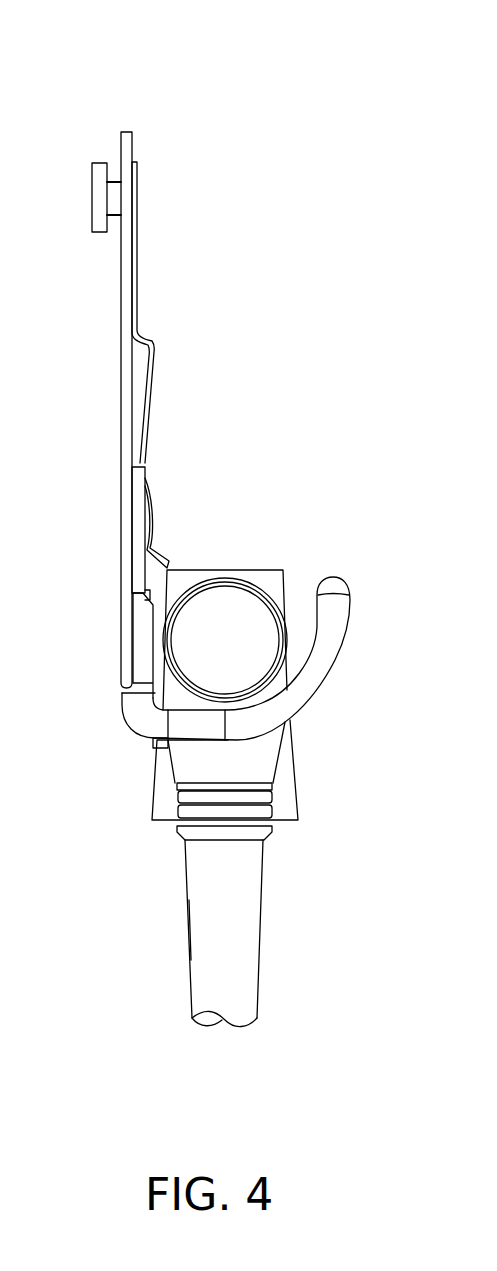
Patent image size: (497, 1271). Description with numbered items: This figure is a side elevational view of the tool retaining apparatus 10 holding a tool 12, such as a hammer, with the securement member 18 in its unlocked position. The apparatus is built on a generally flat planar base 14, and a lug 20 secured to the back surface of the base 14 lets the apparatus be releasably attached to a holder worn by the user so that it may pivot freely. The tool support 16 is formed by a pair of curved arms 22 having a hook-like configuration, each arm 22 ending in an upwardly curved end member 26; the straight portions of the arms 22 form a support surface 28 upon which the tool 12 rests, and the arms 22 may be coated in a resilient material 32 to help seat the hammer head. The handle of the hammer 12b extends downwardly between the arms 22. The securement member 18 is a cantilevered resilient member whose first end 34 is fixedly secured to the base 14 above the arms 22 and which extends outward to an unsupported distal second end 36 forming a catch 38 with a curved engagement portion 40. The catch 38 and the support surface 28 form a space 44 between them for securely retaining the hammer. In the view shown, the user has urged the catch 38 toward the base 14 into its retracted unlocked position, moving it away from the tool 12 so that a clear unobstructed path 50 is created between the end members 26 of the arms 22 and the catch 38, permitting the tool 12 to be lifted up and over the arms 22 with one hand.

The tool retaining apparatus 10 is at (248, 77).
The tool 12 is at (250, 970).
The handle of the hammer 12b is at (197, 947).
The base 14 is at (127, 375).
The tool support 16 is at (342, 739).
The securement member 18 is at (290, 457).
The lug 20 is at (97, 197).
The curved arm 22 is at (152, 750).
The upwardly curved end member 26 is at (340, 597).
The support surface 28 is at (155, 680).
The resilient material 32 is at (320, 693).
The first end 34 is at (135, 283).
The distal second end 36 is at (147, 550).
The catch 38 is at (167, 560).
The curved engagement portion 40 is at (143, 565).
The space 44 is at (294, 602).
The clear unobstructed path 50 is at (270, 560).